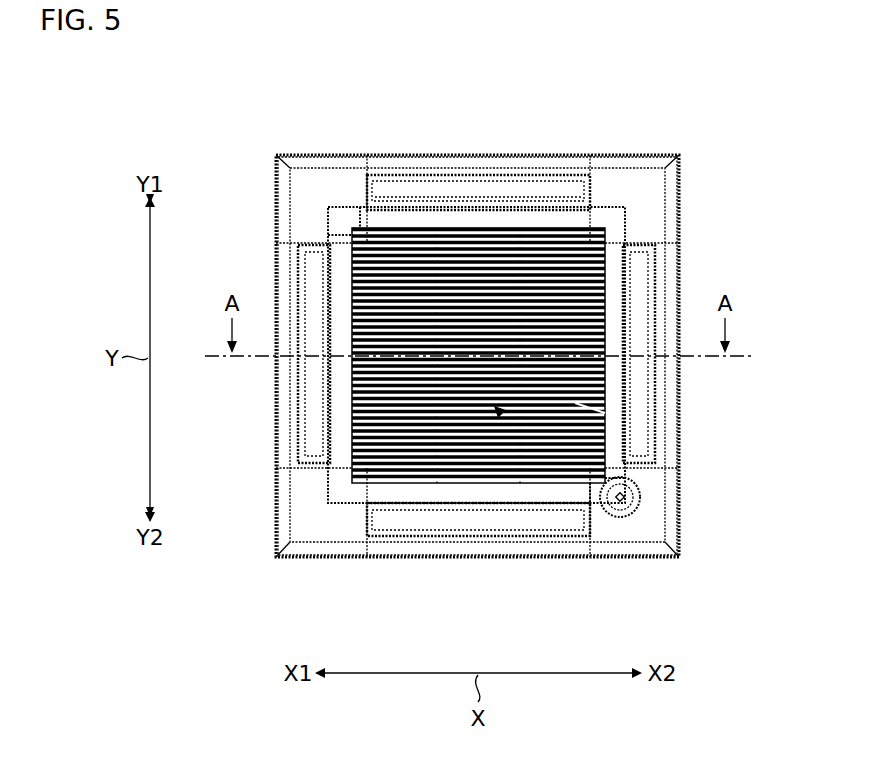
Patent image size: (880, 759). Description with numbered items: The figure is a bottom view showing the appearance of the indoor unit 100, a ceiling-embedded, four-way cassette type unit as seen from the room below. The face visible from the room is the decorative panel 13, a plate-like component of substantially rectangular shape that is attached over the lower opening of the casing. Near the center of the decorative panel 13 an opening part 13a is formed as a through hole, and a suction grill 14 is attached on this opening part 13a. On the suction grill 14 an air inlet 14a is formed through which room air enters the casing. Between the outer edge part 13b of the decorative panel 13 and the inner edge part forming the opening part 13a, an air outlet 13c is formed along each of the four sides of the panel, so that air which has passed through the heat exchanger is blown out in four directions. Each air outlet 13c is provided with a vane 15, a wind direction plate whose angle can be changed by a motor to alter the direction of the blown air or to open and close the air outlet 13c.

The indoor unit 100 is at (695, 140).
The decorative panel 13 is at (333, 185).
The opening part 13a is at (350, 468).
The outer edge part 13b is at (397, 178).
The air outlet 13c is at (540, 180).
The suction grill 14 is at (605, 413).
The air inlet 14a is at (500, 412).
The vane 15 is at (466, 190).